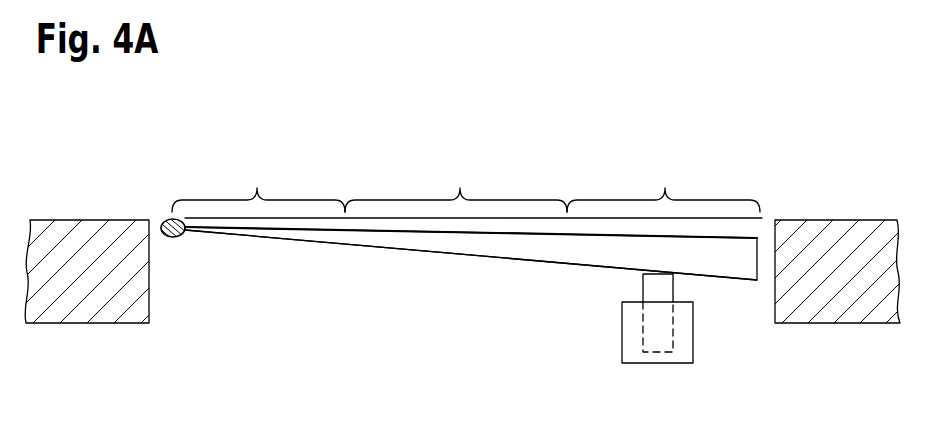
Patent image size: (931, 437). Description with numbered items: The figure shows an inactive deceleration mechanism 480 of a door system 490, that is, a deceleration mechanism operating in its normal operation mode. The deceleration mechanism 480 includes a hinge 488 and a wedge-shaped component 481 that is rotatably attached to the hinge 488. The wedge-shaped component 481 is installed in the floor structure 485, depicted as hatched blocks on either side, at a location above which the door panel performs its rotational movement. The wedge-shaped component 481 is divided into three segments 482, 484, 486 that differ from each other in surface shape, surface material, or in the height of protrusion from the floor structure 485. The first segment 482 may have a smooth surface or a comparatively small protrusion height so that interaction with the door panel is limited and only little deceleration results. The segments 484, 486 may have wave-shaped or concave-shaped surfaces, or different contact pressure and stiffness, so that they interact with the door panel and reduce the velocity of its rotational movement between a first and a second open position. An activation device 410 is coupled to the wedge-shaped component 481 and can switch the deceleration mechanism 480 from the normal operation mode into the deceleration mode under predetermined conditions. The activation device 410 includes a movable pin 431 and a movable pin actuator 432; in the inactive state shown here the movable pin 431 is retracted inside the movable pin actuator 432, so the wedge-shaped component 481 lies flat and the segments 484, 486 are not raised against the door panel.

The activation device 410 is at (754, 370).
The movable pin 431 is at (602, 313).
The movable pin actuator 432 is at (626, 365).
The deceleration mechanism 480 is at (471, 292).
The wedge-shaped component 481 is at (471, 279).
The segment 482 is at (258, 183).
The segment 484 is at (456, 183).
The floor structure 485 is at (465, 268).
The segment 486 is at (663, 183).
The hinge 488 is at (140, 200).
The door system 490 is at (513, 147).